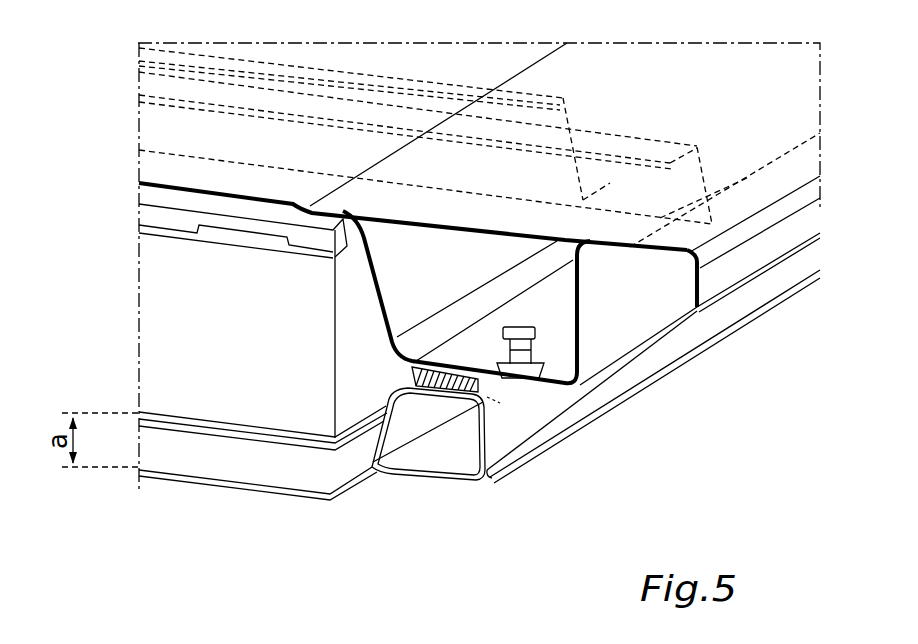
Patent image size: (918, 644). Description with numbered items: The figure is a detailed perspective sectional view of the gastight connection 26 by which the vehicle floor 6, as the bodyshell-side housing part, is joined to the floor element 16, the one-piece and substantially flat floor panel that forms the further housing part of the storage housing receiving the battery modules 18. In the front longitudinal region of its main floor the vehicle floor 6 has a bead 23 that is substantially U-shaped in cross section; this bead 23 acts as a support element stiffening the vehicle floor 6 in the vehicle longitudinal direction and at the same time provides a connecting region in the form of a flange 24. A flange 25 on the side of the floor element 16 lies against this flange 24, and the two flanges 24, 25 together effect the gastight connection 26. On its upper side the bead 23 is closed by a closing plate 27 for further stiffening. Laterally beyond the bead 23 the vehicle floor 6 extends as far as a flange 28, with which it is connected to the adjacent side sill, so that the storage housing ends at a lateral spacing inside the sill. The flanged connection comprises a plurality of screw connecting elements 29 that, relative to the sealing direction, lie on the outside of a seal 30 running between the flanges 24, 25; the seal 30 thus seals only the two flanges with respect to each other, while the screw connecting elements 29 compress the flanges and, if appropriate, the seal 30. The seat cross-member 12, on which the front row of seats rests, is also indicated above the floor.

The vehicle floor 6 is at (282, 192).
The seat cross-member 12 is at (232, 95).
The floor element 16 is at (265, 494).
The battery module 18 is at (124, 290).
The bead 23 is at (470, 343).
The flange 24 is at (410, 388).
The flange 25 is at (484, 462).
The gastight connection 26 is at (455, 345).
The closing plate 27 is at (583, 223).
The flange 28 is at (737, 268).
The screw connecting element 29 is at (530, 411).
The seal 30 is at (463, 383).